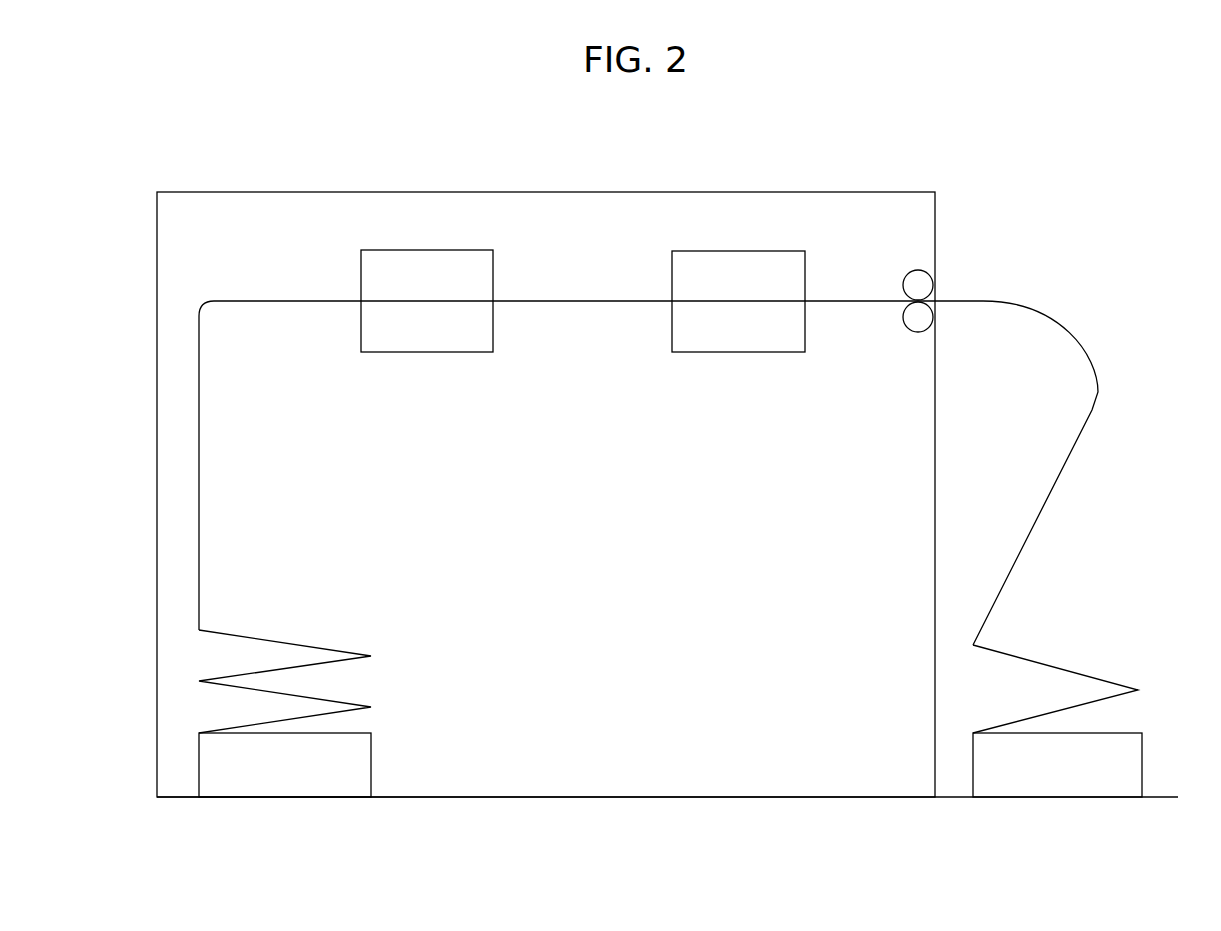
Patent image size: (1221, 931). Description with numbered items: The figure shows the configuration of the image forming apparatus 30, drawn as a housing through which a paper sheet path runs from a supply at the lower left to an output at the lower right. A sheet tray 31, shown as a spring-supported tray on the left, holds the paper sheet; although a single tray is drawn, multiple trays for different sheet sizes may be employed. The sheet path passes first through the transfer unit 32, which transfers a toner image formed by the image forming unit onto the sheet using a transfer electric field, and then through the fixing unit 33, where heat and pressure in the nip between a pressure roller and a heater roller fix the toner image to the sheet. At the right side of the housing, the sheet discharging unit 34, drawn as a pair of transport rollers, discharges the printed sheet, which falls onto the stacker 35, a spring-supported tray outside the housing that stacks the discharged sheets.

The image forming apparatus 30 is at (932, 143).
The sheet tray 31 is at (405, 645).
The transfer unit 32 is at (493, 270).
The fixing unit 33 is at (805, 270).
The sheet discharging unit 34 is at (966, 268).
The stacker 35 is at (1125, 645).